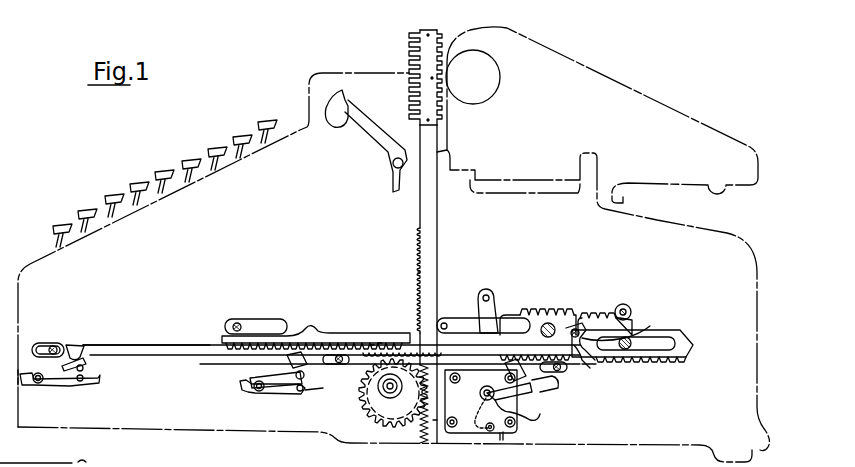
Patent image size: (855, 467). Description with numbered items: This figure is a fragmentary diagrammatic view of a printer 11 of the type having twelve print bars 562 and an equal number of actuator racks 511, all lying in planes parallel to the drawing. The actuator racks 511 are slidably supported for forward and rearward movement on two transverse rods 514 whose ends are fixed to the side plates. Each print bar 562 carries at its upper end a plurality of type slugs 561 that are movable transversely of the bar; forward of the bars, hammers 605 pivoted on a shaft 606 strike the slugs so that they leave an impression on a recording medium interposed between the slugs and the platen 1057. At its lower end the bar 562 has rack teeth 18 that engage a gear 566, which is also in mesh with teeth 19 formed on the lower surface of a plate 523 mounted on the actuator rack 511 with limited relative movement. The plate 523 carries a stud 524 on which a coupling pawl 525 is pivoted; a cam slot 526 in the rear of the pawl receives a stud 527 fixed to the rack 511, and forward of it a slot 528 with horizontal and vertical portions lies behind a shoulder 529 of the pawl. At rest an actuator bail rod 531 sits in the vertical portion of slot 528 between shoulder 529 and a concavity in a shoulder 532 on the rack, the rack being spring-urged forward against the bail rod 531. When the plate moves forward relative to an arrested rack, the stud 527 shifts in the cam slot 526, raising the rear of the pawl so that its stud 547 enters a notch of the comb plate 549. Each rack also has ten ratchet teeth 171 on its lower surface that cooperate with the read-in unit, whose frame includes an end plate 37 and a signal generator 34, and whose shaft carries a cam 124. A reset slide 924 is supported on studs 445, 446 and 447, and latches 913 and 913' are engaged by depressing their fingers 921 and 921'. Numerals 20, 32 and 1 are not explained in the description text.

The printer 11 is at (165, 158).
The type slugs 561 is at (408, 58).
The platen 1057 is at (497, 85).
The hammers 605 is at (346, 135).
The shaft 606 is at (393, 164).
The print bars 562 is at (437, 232).
The rack teeth 18 is at (418, 272).
The stud 524 is at (440, 318).
The coupling pawl 525 is at (472, 312).
The slot 528 is at (500, 320).
The shoulder 529 is at (548, 322).
The actuator bail rod 531 is at (578, 328).
The stud 547 is at (590, 313).
The comb plate 549 is at (627, 309).
The cam slot 526 is at (632, 330).
The rods 514 is at (237, 323).
The actuator rack 511 is at (318, 331).
The teeth 19 is at (380, 343).
The rail 20 is at (372, 345).
The plate 523 is at (405, 348).
The stud 445 is at (53, 344).
The finger 921 is at (86, 346).
The reset slide 924 is at (155, 356).
The latch 913 is at (60, 386).
The finger 921' is at (261, 371).
The latch 913' is at (271, 396).
The stud 446 is at (340, 365).
The gear 566 is at (368, 410).
The cam 124 is at (436, 420).
The plate 32 is at (520, 427).
The end plate 37 is at (504, 434).
The stud 447 is at (560, 392).
The ratchet teeth 171 is at (582, 368).
The shoulder 532 is at (586, 350).
The stud 527 is at (614, 362).
The base line 1 is at (34, 466).
The signal generator 34 is at (90, 460).